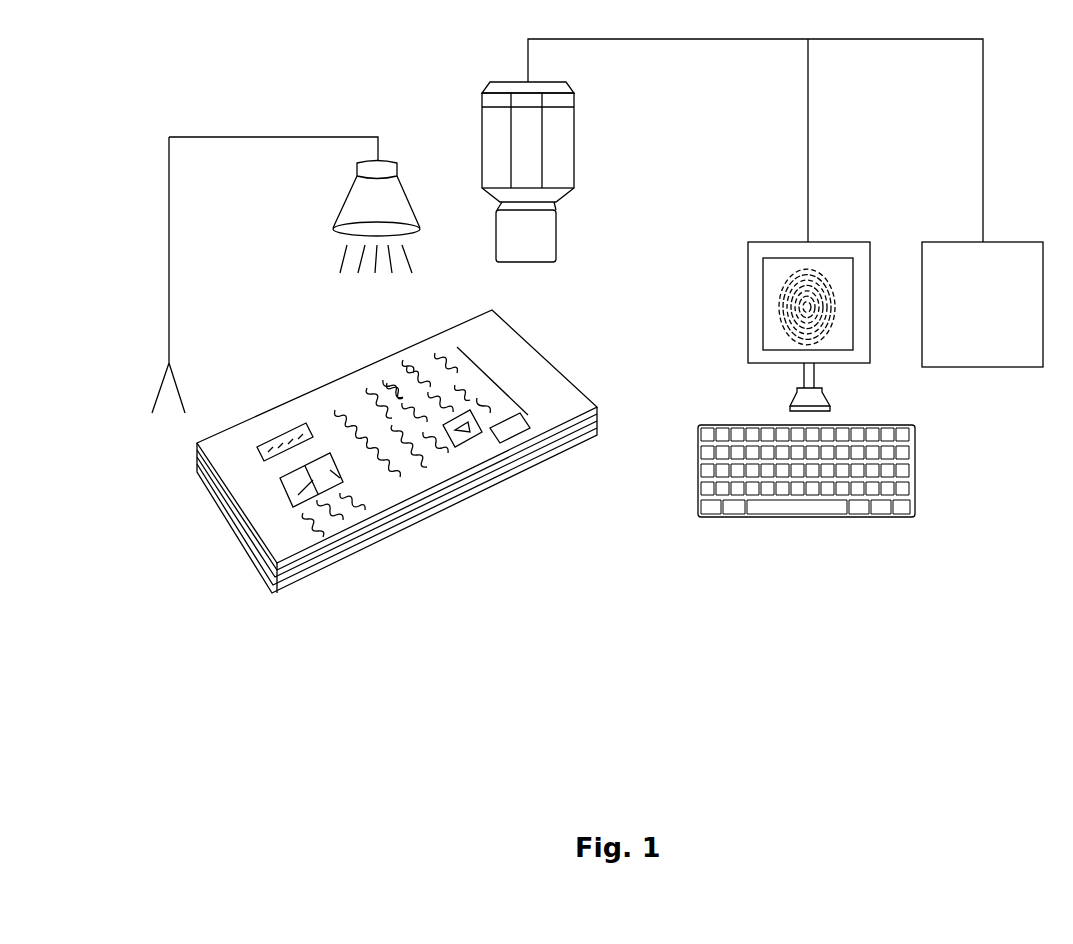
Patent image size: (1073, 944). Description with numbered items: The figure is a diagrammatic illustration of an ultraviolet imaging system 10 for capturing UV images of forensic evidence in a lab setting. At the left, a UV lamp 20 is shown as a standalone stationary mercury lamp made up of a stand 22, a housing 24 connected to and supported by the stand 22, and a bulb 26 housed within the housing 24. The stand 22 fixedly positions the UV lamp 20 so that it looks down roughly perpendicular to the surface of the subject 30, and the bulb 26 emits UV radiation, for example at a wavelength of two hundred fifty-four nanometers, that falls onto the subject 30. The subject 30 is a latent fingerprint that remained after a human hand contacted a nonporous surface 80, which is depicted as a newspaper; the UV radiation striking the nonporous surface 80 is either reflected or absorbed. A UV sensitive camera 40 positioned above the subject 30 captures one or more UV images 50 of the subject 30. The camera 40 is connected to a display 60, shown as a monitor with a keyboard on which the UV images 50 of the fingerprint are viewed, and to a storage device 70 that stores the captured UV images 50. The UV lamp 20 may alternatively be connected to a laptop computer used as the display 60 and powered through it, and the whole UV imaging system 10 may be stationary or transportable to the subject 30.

The UV imaging system 10 is at (450, 65).
The UV lamp 20 is at (136, 250).
The stand 22 is at (168, 150).
The housing 24 is at (404, 180).
The bulb 26 is at (410, 245).
The subject 30 is at (540, 444).
The UV sensitive camera 40 is at (482, 125).
The UV images 50 is at (822, 270).
The display 60 is at (748, 293).
The storage device 70 is at (996, 319).
The nonporous surface 80 is at (330, 382).